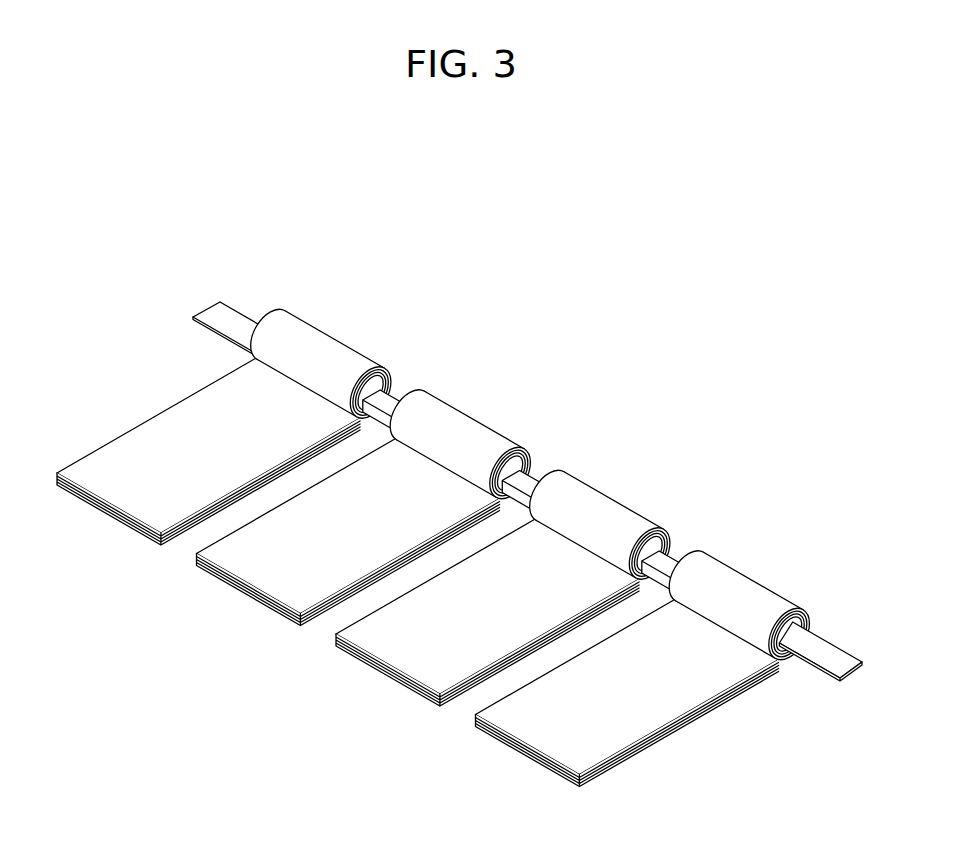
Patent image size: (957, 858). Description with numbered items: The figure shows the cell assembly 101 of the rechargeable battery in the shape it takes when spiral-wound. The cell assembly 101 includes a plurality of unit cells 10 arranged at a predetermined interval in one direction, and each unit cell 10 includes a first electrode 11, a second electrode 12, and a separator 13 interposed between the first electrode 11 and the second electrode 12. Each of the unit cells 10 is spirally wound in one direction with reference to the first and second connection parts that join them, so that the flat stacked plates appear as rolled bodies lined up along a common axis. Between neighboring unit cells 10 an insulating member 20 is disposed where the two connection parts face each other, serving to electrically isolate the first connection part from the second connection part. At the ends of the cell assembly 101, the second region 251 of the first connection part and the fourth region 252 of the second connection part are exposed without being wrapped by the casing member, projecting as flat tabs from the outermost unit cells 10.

The unit cell 10 is at (334, 350).
The first electrode 11 is at (578, 765).
The second electrode 12 is at (586, 780).
The separator 13 is at (545, 767).
The insulating member 20 is at (398, 383).
The cell assembly 101 is at (575, 389).
The second region 251 is at (827, 657).
The fourth region 252 is at (234, 318).